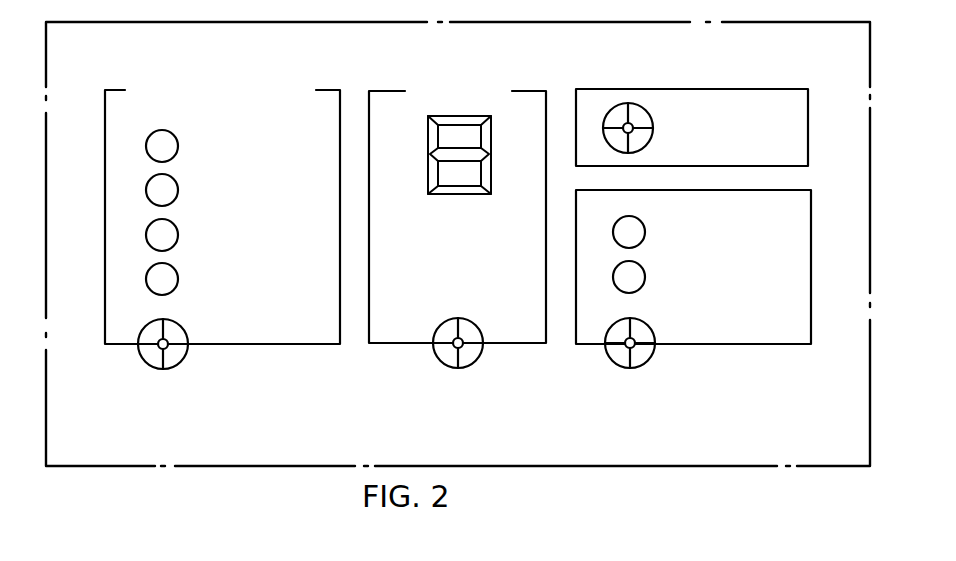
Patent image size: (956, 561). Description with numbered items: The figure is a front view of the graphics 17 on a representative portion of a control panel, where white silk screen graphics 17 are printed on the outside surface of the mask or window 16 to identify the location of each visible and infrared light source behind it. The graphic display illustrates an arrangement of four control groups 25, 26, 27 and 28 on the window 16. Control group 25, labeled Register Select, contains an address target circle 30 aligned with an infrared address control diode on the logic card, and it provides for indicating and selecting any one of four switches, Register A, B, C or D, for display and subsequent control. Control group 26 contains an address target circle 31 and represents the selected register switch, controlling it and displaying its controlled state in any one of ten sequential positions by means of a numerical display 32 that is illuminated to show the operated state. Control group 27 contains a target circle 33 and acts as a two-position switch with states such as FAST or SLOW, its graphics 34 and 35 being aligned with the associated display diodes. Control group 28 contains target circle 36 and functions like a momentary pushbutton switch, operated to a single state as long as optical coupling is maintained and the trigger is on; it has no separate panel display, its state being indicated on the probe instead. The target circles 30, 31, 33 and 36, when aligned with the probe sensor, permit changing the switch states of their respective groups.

The window 16 is at (487, 22).
The graphics 17 is at (442, 399).
The control group 25 is at (322, 91).
The control group 26 is at (522, 91).
The control group 27 is at (797, 190).
The control group 28 is at (788, 89).
The address target circle 30 is at (178, 363).
The address target circle 31 is at (473, 361).
The numerical display 32 is at (428, 132).
The target circle 33 is at (645, 361).
The graphics 34 is at (613, 229).
The graphics 35 is at (613, 277).
The target circle 36 is at (604, 121).